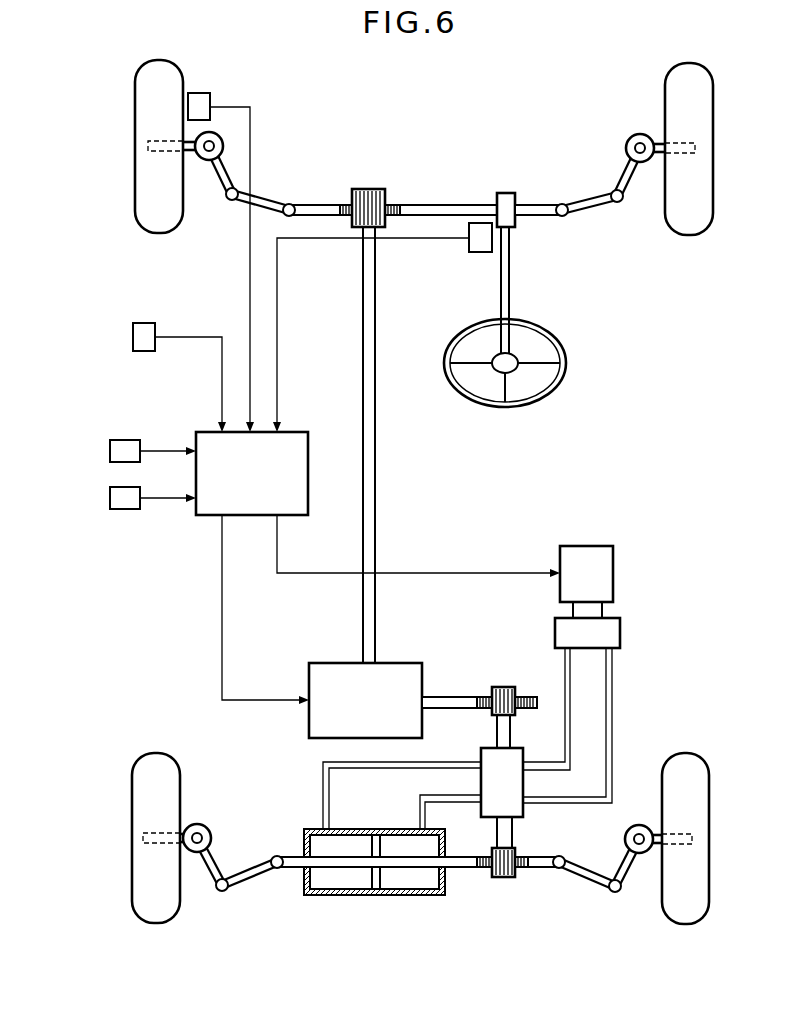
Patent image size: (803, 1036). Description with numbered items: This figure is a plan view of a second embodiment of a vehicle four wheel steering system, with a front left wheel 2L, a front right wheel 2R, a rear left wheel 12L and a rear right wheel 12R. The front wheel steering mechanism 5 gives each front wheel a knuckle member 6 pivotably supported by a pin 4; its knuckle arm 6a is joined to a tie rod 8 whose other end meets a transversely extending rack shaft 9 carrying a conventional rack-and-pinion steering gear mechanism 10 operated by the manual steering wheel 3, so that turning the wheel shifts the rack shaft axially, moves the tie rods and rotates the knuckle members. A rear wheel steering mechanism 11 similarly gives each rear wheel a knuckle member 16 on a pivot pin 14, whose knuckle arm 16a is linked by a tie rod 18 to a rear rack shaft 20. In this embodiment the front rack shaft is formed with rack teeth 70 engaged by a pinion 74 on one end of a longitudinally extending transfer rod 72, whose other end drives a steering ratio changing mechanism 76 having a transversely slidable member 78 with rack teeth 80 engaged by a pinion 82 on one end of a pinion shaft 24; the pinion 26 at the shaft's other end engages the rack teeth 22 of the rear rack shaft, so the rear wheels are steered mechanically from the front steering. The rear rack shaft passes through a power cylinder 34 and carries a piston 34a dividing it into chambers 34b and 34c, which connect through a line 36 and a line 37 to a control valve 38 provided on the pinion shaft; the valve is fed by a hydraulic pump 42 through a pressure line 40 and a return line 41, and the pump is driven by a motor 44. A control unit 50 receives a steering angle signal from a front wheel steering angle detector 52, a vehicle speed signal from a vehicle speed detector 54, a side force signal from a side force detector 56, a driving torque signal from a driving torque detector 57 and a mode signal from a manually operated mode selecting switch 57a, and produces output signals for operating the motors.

The front left wheel 2L is at (153, 233).
The front right wheel 2R is at (680, 235).
The steering wheel 3 is at (562, 375).
The pin 4 is at (219, 140).
The front wheel steering mechanism 5 is at (399, 168).
The knuckle member 6 is at (204, 160).
The knuckle arm 6a is at (226, 190).
The tie rod 8 is at (262, 197).
The rack shaft 9 is at (545, 215).
The steering gear mechanism 10 is at (527, 194).
The rear wheel steering mechanism 11 is at (292, 808).
The rear left wheel 12L is at (156, 923).
The rear right wheel 12R is at (684, 924).
The pivot pin 14 is at (212, 838).
The knuckle member 16 is at (196, 856).
The knuckle arm 16a is at (216, 892).
The tie rod 18 is at (250, 878).
The rack shaft 20 is at (541, 867).
The rack teeth 22 is at (474, 857).
The pinion shaft 24 is at (512, 834).
The pinion 26 is at (503, 877).
The power cylinder 34 is at (300, 905).
The piston 34a is at (376, 890).
The chamber 34b is at (425, 880).
The chamber 34c is at (330, 880).
The line 36 is at (420, 806).
The line 37 is at (330, 778).
The control valve 38 is at (481, 755).
The pressure line 40 is at (565, 731).
The return line 41 is at (612, 690).
The hydraulic pump 42 is at (620, 636).
The motor 44 is at (613, 560).
The control unit 50 is at (196, 510).
The front wheel steering angle detector 52 is at (480, 252).
The vehicle speed detector 54 is at (200, 93).
The side force detector 56 is at (144, 351).
The driving torque detector 57 is at (110, 450).
The mode selecting switch 57a is at (110, 500).
The rack teeth 70 is at (342, 205).
The transfer rod 72 is at (378, 430).
The pinion 74 is at (370, 189).
The steering ratio changing mechanism 76 is at (328, 663).
The slidable member 78 is at (447, 697).
The rack teeth 80 is at (527, 697).
The pinion 82 is at (500, 687).